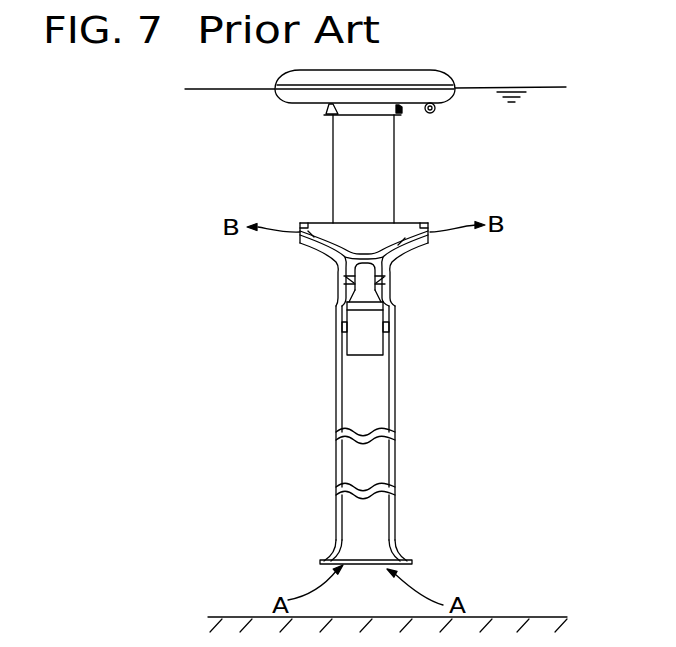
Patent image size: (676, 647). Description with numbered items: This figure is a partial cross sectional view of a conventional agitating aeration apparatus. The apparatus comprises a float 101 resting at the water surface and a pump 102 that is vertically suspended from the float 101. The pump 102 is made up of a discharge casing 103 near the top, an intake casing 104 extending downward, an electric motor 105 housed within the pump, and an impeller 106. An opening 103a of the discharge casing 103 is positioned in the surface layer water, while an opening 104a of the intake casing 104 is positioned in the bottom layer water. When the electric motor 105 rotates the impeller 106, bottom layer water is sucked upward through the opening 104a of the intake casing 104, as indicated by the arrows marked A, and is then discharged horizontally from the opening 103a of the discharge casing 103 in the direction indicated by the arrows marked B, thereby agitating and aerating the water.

The float 101 is at (437, 75).
The pump 102 is at (492, 325).
The discharge casing 103 is at (397, 262).
The opening of the discharge casing 103a is at (430, 230).
The intake casing 104 is at (396, 418).
The opening of the intake casing 104a is at (398, 563).
The electric motor 105 is at (377, 338).
The impeller 106 is at (348, 278).